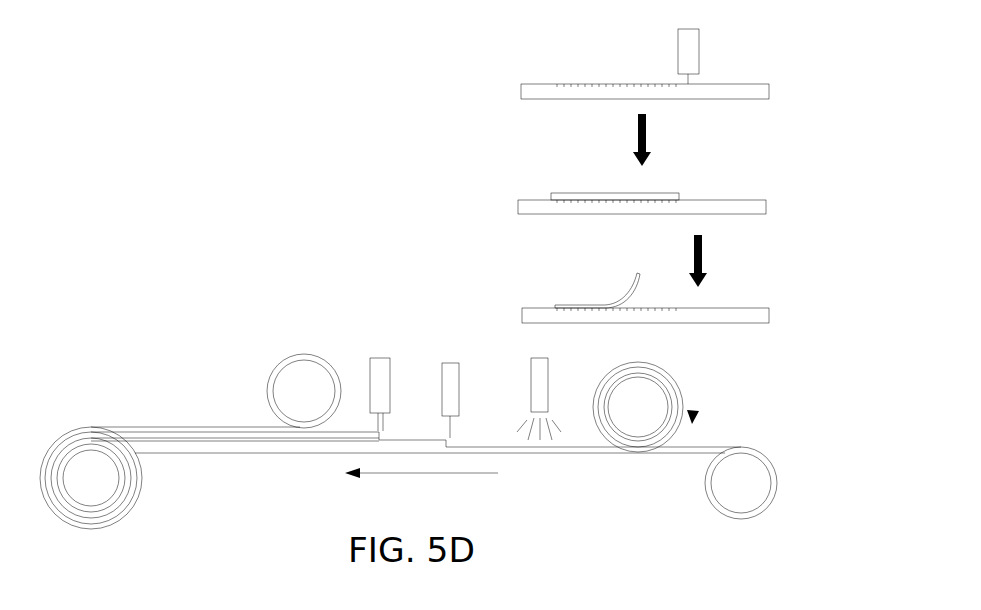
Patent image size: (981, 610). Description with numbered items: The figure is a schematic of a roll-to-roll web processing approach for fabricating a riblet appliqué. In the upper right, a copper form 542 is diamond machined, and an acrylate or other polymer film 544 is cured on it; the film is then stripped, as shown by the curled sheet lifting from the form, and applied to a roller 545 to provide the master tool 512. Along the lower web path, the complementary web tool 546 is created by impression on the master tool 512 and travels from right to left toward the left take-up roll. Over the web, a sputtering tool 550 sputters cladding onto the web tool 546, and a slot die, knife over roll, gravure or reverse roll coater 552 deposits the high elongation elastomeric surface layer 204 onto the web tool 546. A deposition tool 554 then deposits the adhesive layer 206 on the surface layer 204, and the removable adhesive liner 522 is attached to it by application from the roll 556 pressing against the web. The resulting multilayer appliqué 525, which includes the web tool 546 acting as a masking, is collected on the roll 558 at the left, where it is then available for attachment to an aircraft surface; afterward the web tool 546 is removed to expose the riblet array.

The copper form 542 is at (734, 90).
The polymer film 544 is at (667, 193).
The roller 545 is at (673, 393).
The master tool 512 is at (699, 415).
The sputtering tool 550 is at (550, 382).
The coater 552 is at (443, 363).
The deposition tool 554 is at (373, 358).
The surface layer 204 is at (413, 440).
The adhesive layer 206 is at (352, 430).
The roll 556 is at (278, 370).
The removable adhesive liner 522 is at (177, 425).
The multilayer appliqué 525 is at (140, 452).
The roll 558 is at (130, 517).
The web tool 546 is at (577, 448).